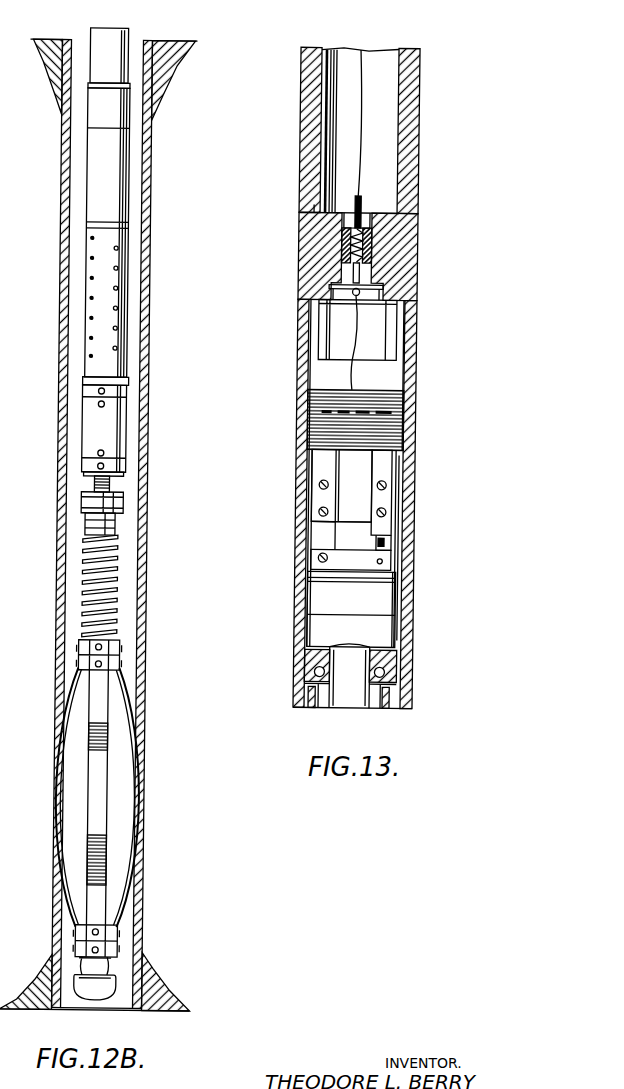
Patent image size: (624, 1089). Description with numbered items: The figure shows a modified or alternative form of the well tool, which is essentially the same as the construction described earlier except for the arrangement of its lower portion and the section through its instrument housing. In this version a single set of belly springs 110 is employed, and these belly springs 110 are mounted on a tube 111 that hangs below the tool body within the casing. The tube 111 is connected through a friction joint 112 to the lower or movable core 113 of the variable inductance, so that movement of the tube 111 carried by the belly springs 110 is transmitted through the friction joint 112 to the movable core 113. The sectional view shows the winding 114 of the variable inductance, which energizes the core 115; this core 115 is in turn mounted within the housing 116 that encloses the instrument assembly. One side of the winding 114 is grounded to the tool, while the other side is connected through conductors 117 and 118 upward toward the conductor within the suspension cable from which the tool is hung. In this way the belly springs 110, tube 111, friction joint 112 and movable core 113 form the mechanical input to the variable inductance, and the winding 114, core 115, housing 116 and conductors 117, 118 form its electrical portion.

In FIG. 12B, the belly springs 110 is at (92, 717).
In FIG. 12B, the tube 111 is at (92, 484).
In FIG. 13, the friction joint 112 is at (325, 576).
In FIG. 13, the lower or movable core 113 is at (370, 567).
In FIG. 13, the winding 114 is at (350, 494).
In FIG. 13, the core 115 is at (392, 528).
In FIG. 13, the housing 116 is at (410, 440).
In FIG. 13, the conductor 117 is at (362, 338).
In FIG. 13, the conductor 118 is at (357, 100).